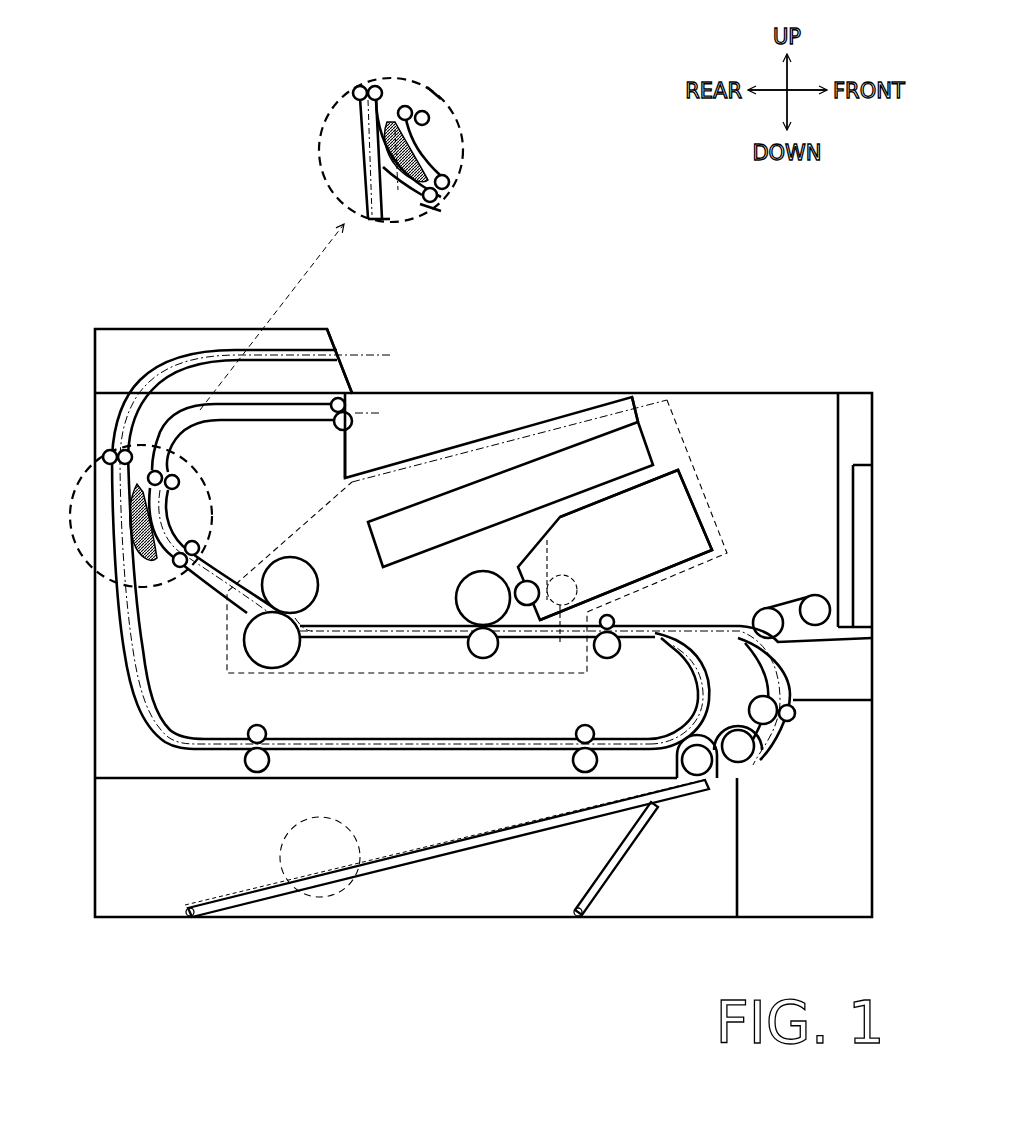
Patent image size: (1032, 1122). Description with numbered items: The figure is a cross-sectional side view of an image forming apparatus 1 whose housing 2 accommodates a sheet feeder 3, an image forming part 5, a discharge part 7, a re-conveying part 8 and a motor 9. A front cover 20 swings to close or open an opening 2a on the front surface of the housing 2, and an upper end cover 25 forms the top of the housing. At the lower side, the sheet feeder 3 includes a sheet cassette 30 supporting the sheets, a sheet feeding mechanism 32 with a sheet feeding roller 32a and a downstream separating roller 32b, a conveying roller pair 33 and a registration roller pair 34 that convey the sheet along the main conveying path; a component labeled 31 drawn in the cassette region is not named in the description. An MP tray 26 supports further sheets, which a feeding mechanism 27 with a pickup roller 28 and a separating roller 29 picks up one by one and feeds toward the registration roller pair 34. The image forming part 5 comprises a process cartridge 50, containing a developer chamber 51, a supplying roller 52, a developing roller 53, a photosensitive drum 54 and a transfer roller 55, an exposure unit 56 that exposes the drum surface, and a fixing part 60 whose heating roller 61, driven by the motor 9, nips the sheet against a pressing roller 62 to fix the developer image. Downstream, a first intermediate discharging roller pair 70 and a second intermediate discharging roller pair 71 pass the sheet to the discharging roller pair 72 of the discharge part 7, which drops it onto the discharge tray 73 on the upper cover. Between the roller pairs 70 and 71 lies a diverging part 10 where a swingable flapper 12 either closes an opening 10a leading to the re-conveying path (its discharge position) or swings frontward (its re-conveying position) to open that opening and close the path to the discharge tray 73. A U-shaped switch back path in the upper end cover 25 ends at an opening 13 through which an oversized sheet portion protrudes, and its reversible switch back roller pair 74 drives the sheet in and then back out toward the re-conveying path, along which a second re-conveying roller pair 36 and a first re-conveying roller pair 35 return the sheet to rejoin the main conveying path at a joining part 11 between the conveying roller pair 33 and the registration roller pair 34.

The image forming apparatus 1 is at (529, 292).
The housing 2 is at (792, 388).
The opening 2a is at (846, 456).
The sheet feeder 3 is at (676, 888).
The image forming part 5 is at (700, 462).
The discharge part 7 is at (424, 402).
The re-conveying part 8 is at (422, 738).
The motor 9 is at (320, 898).
The diverging part 10 is at (140, 480).
The opening 10a is at (162, 514).
The joining part 11 is at (646, 648).
The flapper 12 is at (135, 516).
The opening 13 is at (340, 352).
The front cover 20 is at (862, 413).
The upper end cover 25 is at (214, 326).
The MP tray 26 is at (856, 568).
The feeding mechanism 27 is at (790, 557).
The pickup roller 28 is at (813, 596).
The separating roller 29 is at (768, 608).
The sheet cassette 30 is at (95, 848).
The pressing plate 31 is at (480, 912).
The sheet feeding mechanism 32 is at (748, 790).
The sheet feeding roller 32a is at (700, 768).
The separating roller 32b is at (742, 754).
The conveying roller pair 33 is at (797, 715).
The registration roller pair 34 is at (612, 620).
The first re-conveying roller pair 35 is at (577, 734).
The second re-conveying roller pair 36 is at (265, 734).
The process cartridge 50 is at (526, 566).
The developer chamber 51 is at (627, 538).
The supplying roller 52 is at (560, 623).
The developing roller 53 is at (527, 606).
The photosensitive drum 54 is at (458, 598).
The transfer roller 55 is at (472, 657).
The exposure unit 56 is at (497, 507).
The fixing part 60 is at (296, 563).
The heating roller 61 is at (320, 583).
The pressing roller 62 is at (292, 644).
The first intermediate discharging roller pair 70 is at (200, 549).
The second intermediate discharging roller pair 71 is at (180, 481).
The discharging roller pair 72 is at (348, 420).
The discharge tray 73 is at (562, 414).
The switch back roller pair 74 is at (103, 456).